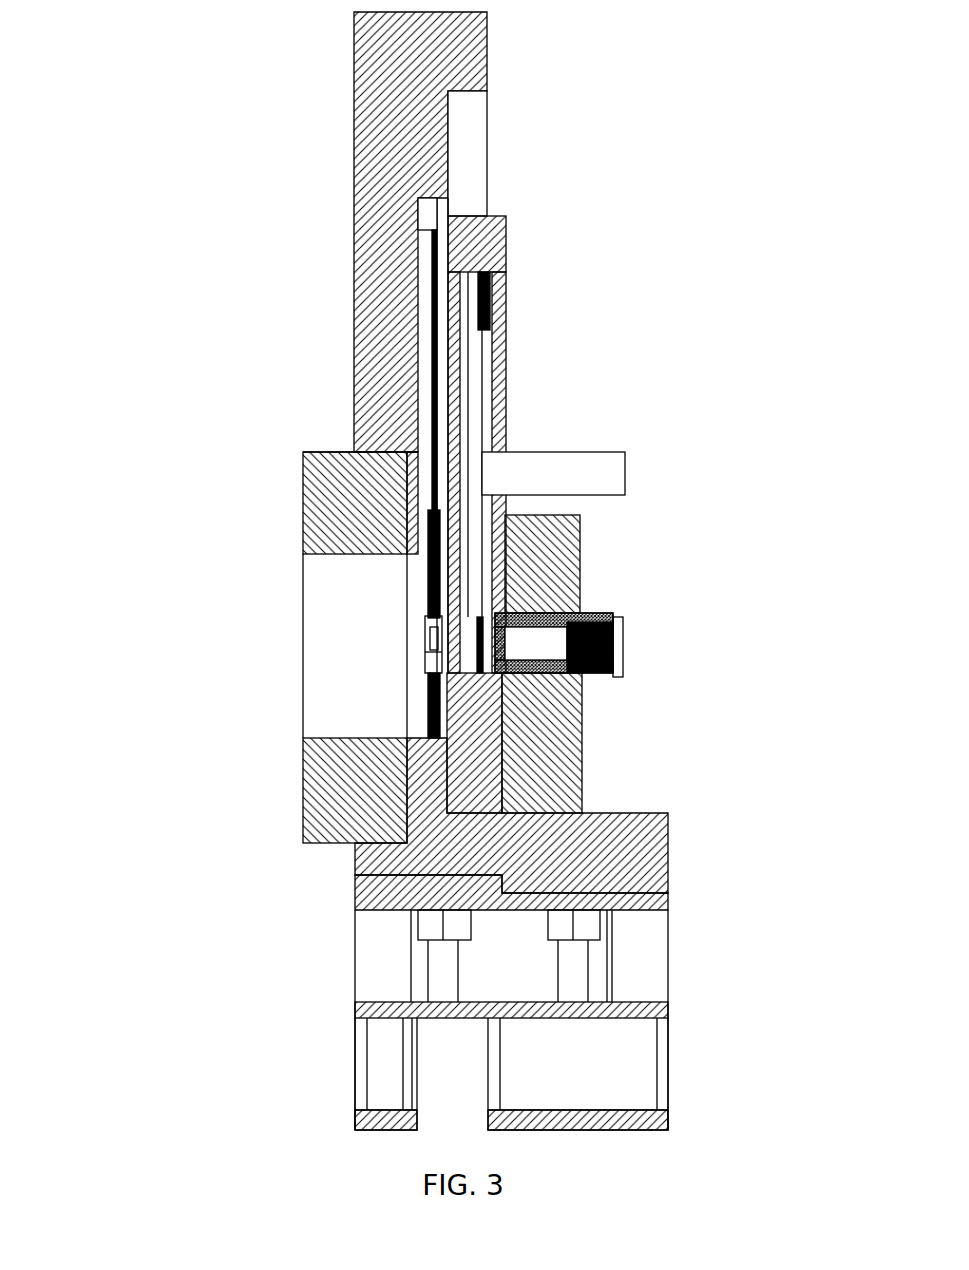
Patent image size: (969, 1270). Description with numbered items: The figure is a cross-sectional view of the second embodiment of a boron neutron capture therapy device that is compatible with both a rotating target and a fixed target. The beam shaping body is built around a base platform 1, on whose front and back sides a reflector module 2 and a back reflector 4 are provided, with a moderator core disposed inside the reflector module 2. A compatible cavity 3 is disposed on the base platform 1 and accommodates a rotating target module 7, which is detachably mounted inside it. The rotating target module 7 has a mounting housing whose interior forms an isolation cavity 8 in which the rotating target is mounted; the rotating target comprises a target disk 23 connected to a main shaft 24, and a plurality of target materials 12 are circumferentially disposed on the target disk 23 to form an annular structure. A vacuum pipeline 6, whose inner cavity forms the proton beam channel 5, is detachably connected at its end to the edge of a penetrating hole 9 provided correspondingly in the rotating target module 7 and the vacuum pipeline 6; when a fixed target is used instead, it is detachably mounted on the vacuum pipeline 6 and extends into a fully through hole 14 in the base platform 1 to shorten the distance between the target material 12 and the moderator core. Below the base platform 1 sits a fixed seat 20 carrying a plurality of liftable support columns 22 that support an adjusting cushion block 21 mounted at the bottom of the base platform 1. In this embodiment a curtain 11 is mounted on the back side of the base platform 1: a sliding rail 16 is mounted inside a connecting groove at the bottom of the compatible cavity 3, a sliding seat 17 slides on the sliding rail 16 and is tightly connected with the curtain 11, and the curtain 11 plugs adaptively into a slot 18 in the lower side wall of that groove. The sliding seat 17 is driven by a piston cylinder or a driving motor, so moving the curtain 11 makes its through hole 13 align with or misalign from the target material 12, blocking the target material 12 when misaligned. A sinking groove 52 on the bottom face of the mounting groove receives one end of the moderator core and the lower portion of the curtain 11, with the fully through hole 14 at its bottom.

The base platform 1 is at (385, 295).
The reflector module 2 is at (303, 845).
The compatible cavity 3 is at (463, 167).
The back reflector 4 is at (520, 750).
The proton beam channel 5 is at (523, 642).
The vacuum pipeline 6 is at (617, 627).
The rotating target module 7 is at (503, 222).
The isolation cavity 8 is at (500, 300).
The penetrating hole 9 is at (583, 547).
The curtain 11 is at (428, 600).
The target material 12 is at (433, 677).
The through hole 13 is at (430, 652).
The fully through hole 14 is at (428, 617).
The sliding rail 16 is at (355, 408).
The sliding seat 17 is at (355, 447).
The slot 18 is at (430, 552).
The fixed seat 20 is at (370, 1027).
The adjusting cushion block 21 is at (355, 917).
The support column 22 is at (585, 957).
The target disk 23 is at (478, 394).
The main shaft 24 is at (572, 466).
The sinking groove 52 is at (458, 528).